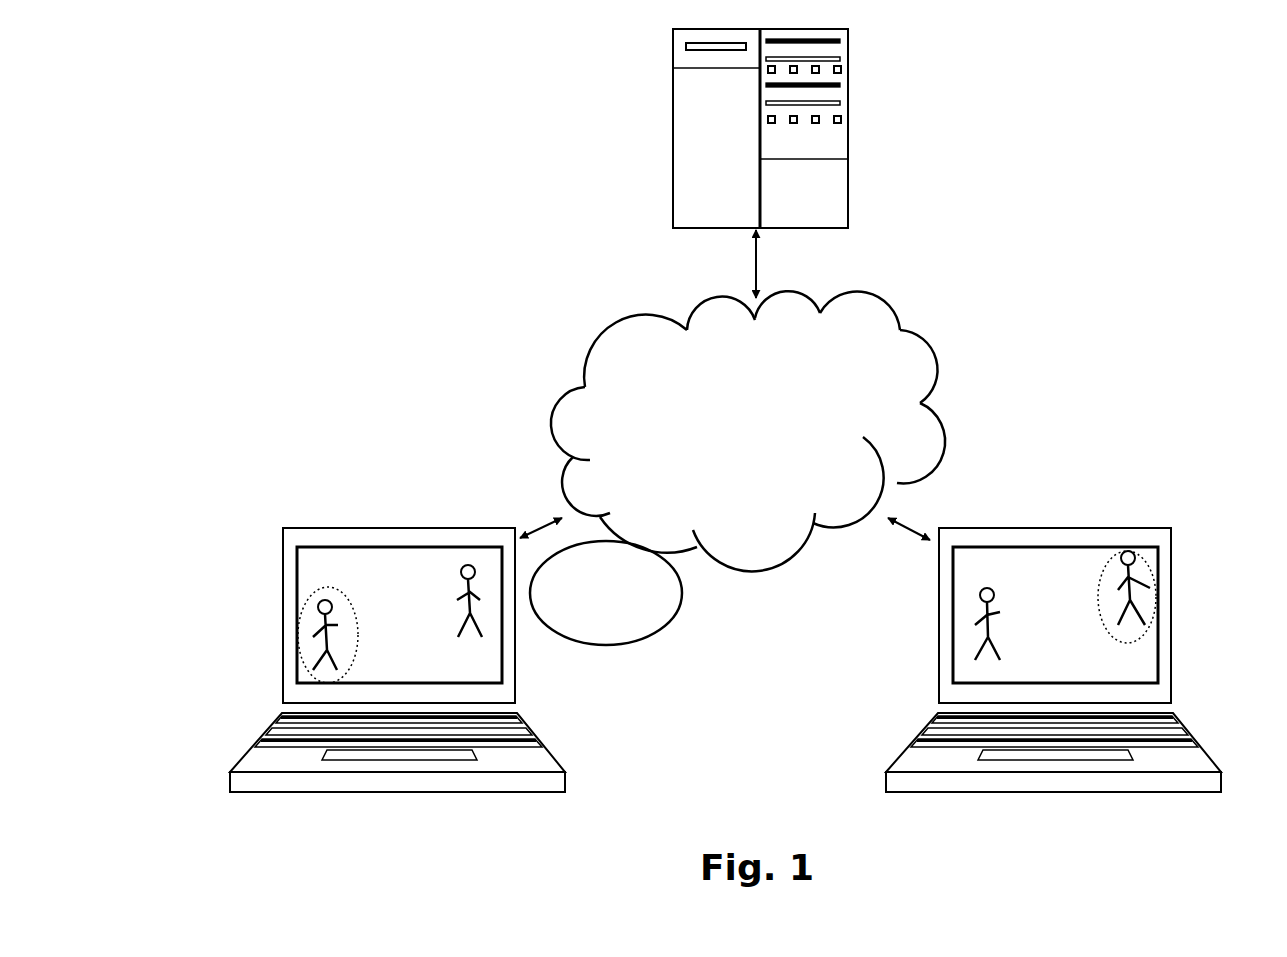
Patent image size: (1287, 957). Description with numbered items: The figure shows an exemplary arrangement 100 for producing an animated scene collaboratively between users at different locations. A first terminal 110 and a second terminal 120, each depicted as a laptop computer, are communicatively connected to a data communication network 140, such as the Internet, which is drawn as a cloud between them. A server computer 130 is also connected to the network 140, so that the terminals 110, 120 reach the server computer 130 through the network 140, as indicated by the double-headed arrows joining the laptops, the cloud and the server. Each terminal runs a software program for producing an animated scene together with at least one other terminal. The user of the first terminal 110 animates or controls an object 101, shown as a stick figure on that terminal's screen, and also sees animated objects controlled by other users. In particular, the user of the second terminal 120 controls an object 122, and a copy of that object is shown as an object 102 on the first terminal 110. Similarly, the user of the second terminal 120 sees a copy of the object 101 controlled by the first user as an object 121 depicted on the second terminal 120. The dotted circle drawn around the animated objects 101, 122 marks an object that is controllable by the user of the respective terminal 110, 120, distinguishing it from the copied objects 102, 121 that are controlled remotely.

The arrangement 100 is at (420, 218).
The object 101 is at (300, 637).
The object 102 is at (483, 607).
The first terminal 110 is at (280, 592).
The second terminal 120 is at (1058, 527).
The object 121 is at (972, 623).
The object 122 is at (1152, 593).
The server computer 130 is at (672, 150).
The data communication network 140 is at (550, 412).